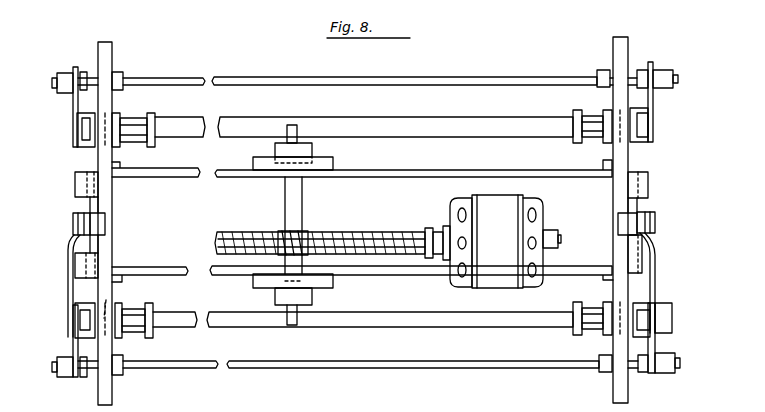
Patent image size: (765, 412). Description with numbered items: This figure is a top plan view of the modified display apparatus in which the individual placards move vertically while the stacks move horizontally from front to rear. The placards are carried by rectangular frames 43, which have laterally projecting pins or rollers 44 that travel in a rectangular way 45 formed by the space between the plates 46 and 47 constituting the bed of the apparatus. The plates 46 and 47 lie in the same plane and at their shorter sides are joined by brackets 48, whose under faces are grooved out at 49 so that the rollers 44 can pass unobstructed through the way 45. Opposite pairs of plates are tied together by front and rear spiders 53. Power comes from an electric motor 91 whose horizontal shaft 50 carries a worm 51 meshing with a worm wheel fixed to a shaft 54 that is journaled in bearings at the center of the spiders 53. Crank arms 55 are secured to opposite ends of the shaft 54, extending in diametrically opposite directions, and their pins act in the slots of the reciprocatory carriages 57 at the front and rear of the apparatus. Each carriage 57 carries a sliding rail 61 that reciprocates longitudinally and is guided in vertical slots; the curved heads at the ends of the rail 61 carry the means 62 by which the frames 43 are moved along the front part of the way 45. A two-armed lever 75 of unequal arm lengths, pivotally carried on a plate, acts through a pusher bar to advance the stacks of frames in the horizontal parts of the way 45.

The rectangular frame 43 is at (360, 78).
The roller 44 is at (655, 70).
The rectangular way 45 is at (104, 142).
The plate 46 is at (110, 304).
The plate 47 is at (108, 56).
The bracket 48 is at (76, 180).
The groove 49 is at (648, 186).
The horizontal shaft 50 is at (386, 242).
The worm 51 is at (306, 232).
The spider 53 is at (172, 178).
The shaft 54 is at (300, 210).
The crank arm 55 is at (302, 156).
The carriage 57 is at (258, 120).
The rail 61 is at (86, 140).
The frame-moving means 62 is at (68, 90).
The two-armed lever 75 is at (652, 256).
The electric motor 91 is at (496, 200).